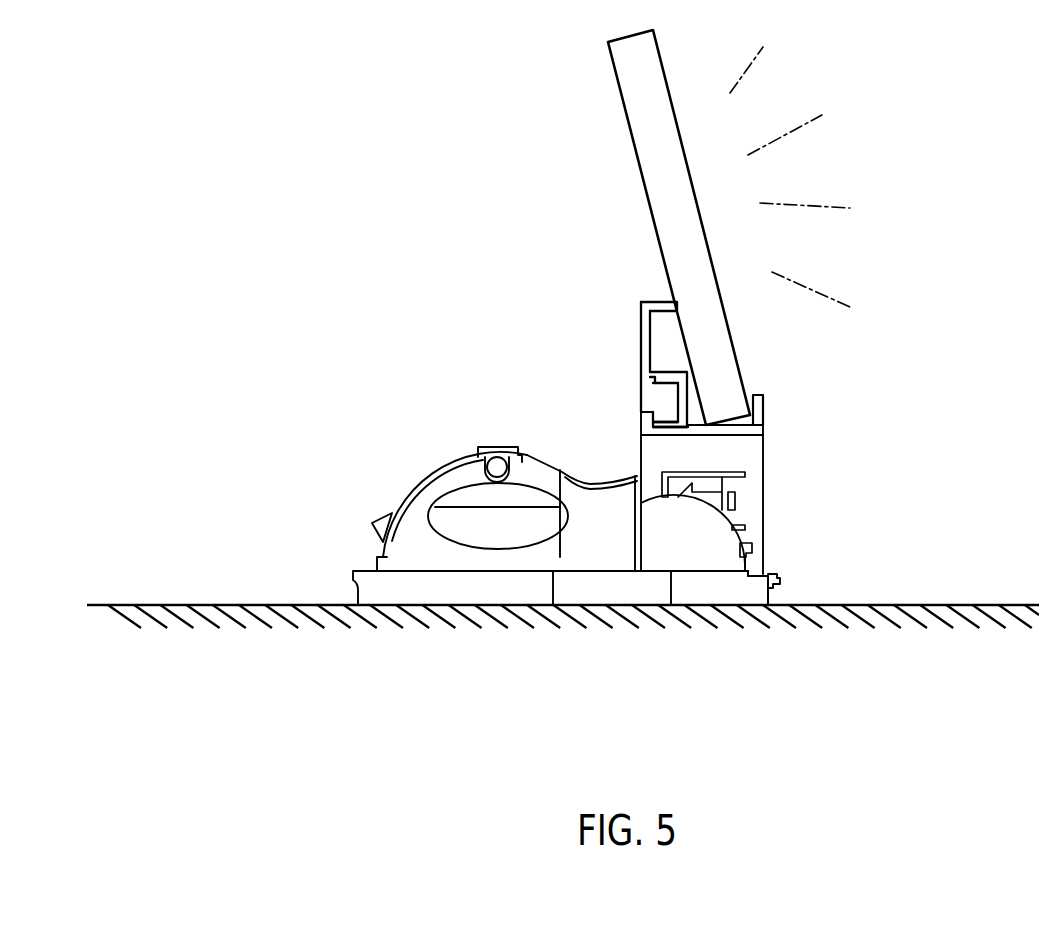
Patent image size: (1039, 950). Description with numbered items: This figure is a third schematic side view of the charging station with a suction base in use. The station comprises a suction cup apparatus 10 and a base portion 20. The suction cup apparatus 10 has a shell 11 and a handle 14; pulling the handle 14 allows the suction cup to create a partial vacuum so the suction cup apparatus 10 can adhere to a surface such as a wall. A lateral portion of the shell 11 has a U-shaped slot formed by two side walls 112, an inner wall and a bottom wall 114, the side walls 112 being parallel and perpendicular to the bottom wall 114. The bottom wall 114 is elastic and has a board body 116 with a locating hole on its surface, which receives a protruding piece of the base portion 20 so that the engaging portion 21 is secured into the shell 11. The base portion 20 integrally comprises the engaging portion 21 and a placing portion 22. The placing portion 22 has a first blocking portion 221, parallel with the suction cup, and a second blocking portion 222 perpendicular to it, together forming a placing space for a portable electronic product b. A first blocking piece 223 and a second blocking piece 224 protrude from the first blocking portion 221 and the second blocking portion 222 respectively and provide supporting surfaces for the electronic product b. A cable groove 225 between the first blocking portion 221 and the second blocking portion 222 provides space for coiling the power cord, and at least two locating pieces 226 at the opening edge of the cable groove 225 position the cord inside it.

The 3C product b is at (640, 83).
The suction cup apparatus 10 is at (418, 465).
The shell 11 is at (462, 580).
The handle 14 is at (457, 457).
The base portion 20 is at (711, 389).
The engaging portion 21 is at (752, 448).
The placing portion 22 is at (579, 316).
The first blocking portion 221 is at (730, 430).
The second blocking portion 222 is at (647, 348).
The first blocking piece 223 is at (760, 402).
The second blocking piece 224 is at (667, 305).
The cable groove 225 is at (673, 422).
The locating pieces 226 is at (647, 397).
The side walls 112 is at (723, 520).
The bottom wall 114 is at (755, 575).
The board body 116 is at (775, 581).